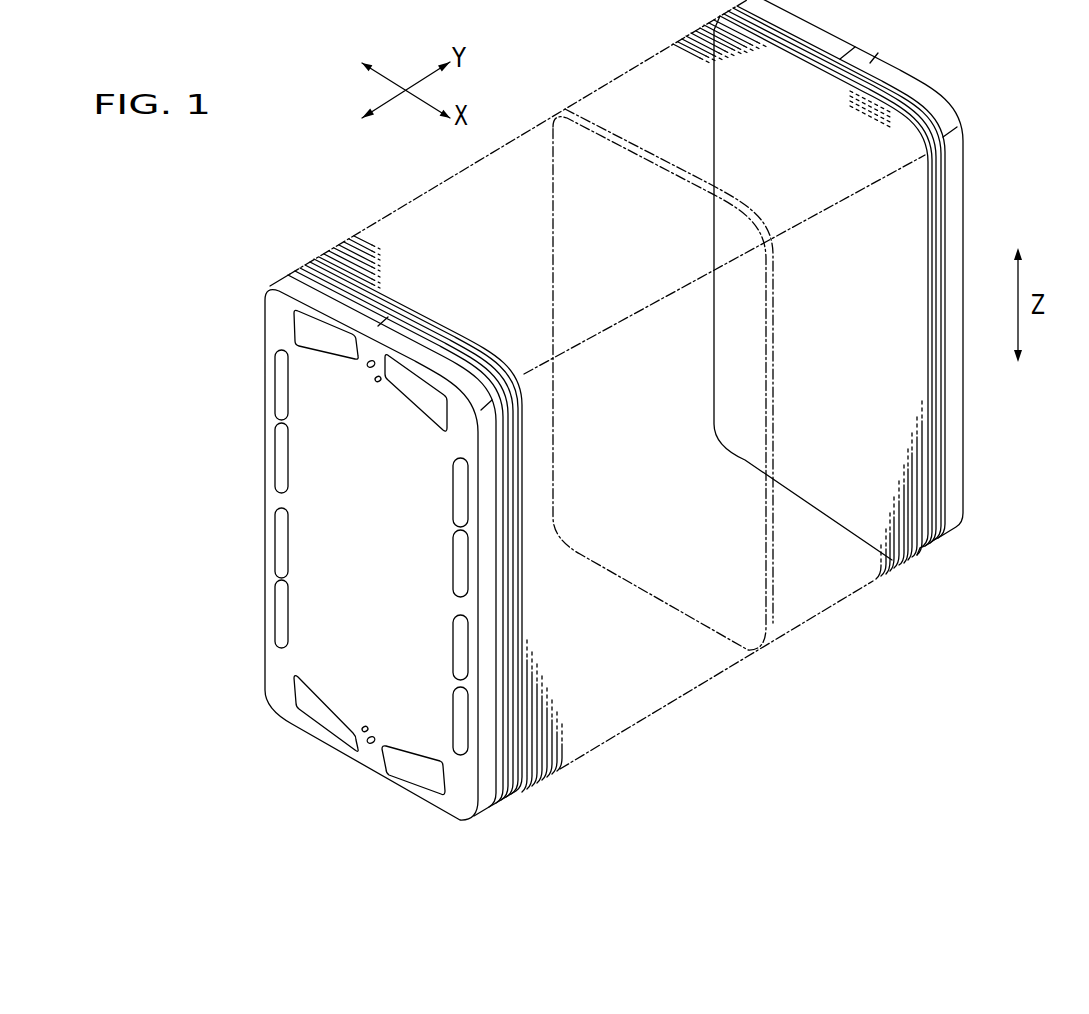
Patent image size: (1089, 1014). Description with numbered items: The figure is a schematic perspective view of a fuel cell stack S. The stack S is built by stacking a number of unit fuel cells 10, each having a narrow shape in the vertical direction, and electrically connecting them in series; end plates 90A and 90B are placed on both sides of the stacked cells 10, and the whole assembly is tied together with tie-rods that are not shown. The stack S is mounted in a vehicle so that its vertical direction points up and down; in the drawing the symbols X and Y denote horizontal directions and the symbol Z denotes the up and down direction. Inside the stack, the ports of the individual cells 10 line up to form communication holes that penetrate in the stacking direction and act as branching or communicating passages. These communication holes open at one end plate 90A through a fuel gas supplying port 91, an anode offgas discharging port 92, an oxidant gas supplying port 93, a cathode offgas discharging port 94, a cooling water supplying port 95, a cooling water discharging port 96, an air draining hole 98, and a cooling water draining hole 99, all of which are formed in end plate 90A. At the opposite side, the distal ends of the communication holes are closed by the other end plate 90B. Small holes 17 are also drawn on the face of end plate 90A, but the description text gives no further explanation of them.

The unit fuel cell 10 is at (330, 262).
The positioning hole 17 is at (375, 362).
The end plate 90A is at (294, 283).
The end plate 90B is at (878, 56).
The fuel gas supplying port 91 is at (296, 336).
The anode offgas discharging port 92 is at (430, 792).
The oxidant gas supplying port 93 is at (414, 372).
The cathode offgas discharging port 94 is at (320, 714).
The cooling water supplying port 95 is at (276, 400).
The cooling water discharging port 96 is at (456, 501).
The air draining hole 98 is at (377, 382).
The cooling water draining hole 99 is at (364, 726).
The fuel cell stack S is at (1002, 96).